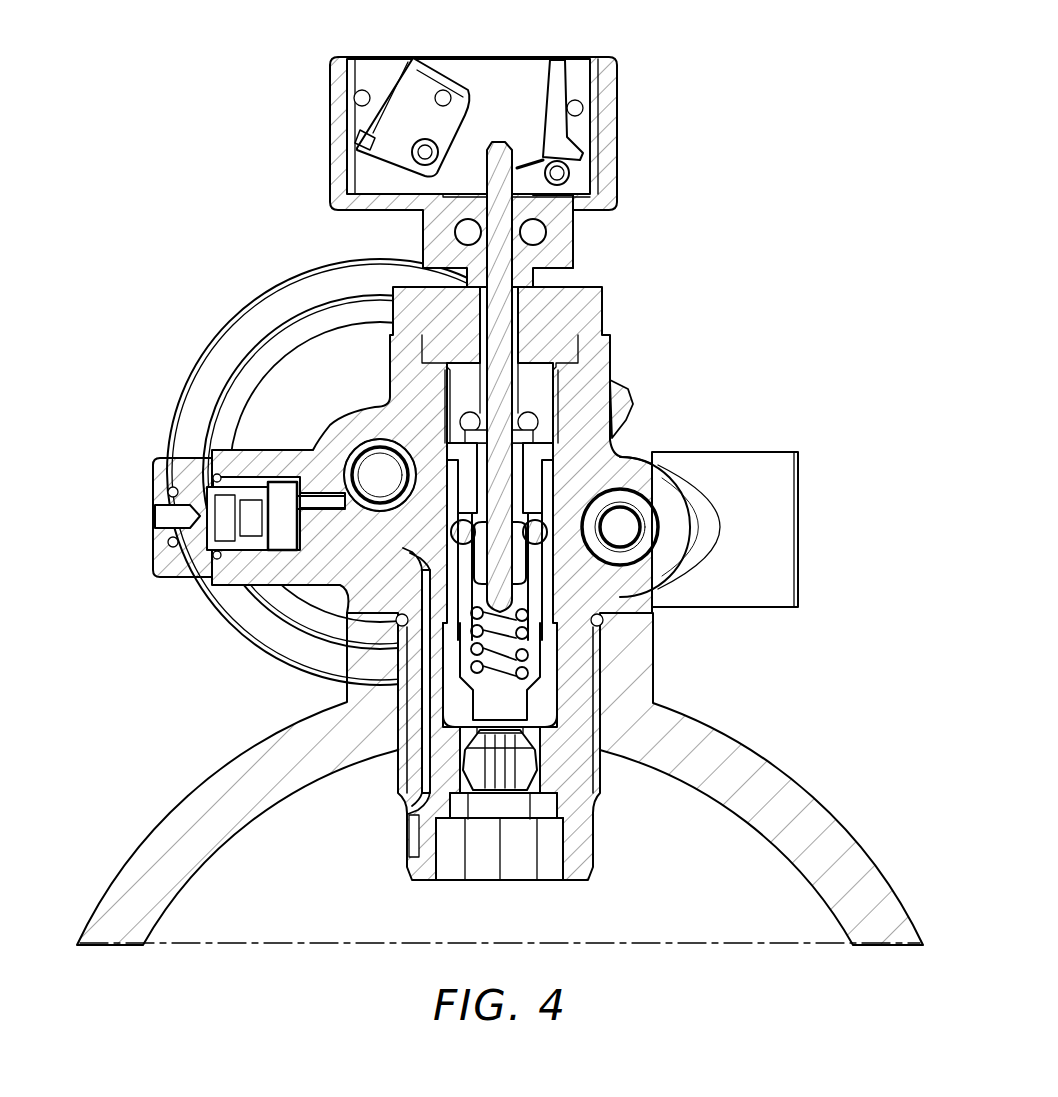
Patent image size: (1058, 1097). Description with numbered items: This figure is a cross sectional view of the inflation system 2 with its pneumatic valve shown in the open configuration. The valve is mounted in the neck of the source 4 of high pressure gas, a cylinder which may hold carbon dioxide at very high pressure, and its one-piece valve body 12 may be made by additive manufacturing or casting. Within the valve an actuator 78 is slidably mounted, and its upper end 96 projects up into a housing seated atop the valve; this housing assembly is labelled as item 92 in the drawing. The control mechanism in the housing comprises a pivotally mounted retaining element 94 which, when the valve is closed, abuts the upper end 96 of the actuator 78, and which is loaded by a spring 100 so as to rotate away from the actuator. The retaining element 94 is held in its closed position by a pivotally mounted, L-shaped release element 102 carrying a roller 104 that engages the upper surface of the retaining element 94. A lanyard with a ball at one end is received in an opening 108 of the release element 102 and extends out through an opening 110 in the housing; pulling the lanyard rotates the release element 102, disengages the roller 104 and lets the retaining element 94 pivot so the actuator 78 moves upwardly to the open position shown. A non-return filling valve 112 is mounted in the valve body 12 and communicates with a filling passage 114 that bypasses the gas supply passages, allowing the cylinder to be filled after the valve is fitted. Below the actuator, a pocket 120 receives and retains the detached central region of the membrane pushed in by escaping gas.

The inflation system 2 is at (500, 480).
The source of high pressure gas 4 is at (777, 783).
The valve body 12 is at (505, 583).
The actuator 78 is at (500, 247).
The actuator housing 92 is at (483, 151).
The retaining element 94 is at (568, 140).
The upper end of the actuator 96 is at (498, 152).
The spring 100 is at (595, 100).
The release element 102 is at (367, 96).
The roller 104 is at (435, 137).
The opening of the release element 108 is at (360, 130).
The opening in the housing 110 is at (337, 163).
The non-return filling valve 112 is at (183, 565).
The filling passage 114 is at (425, 790).
The pocket 120 is at (587, 797).